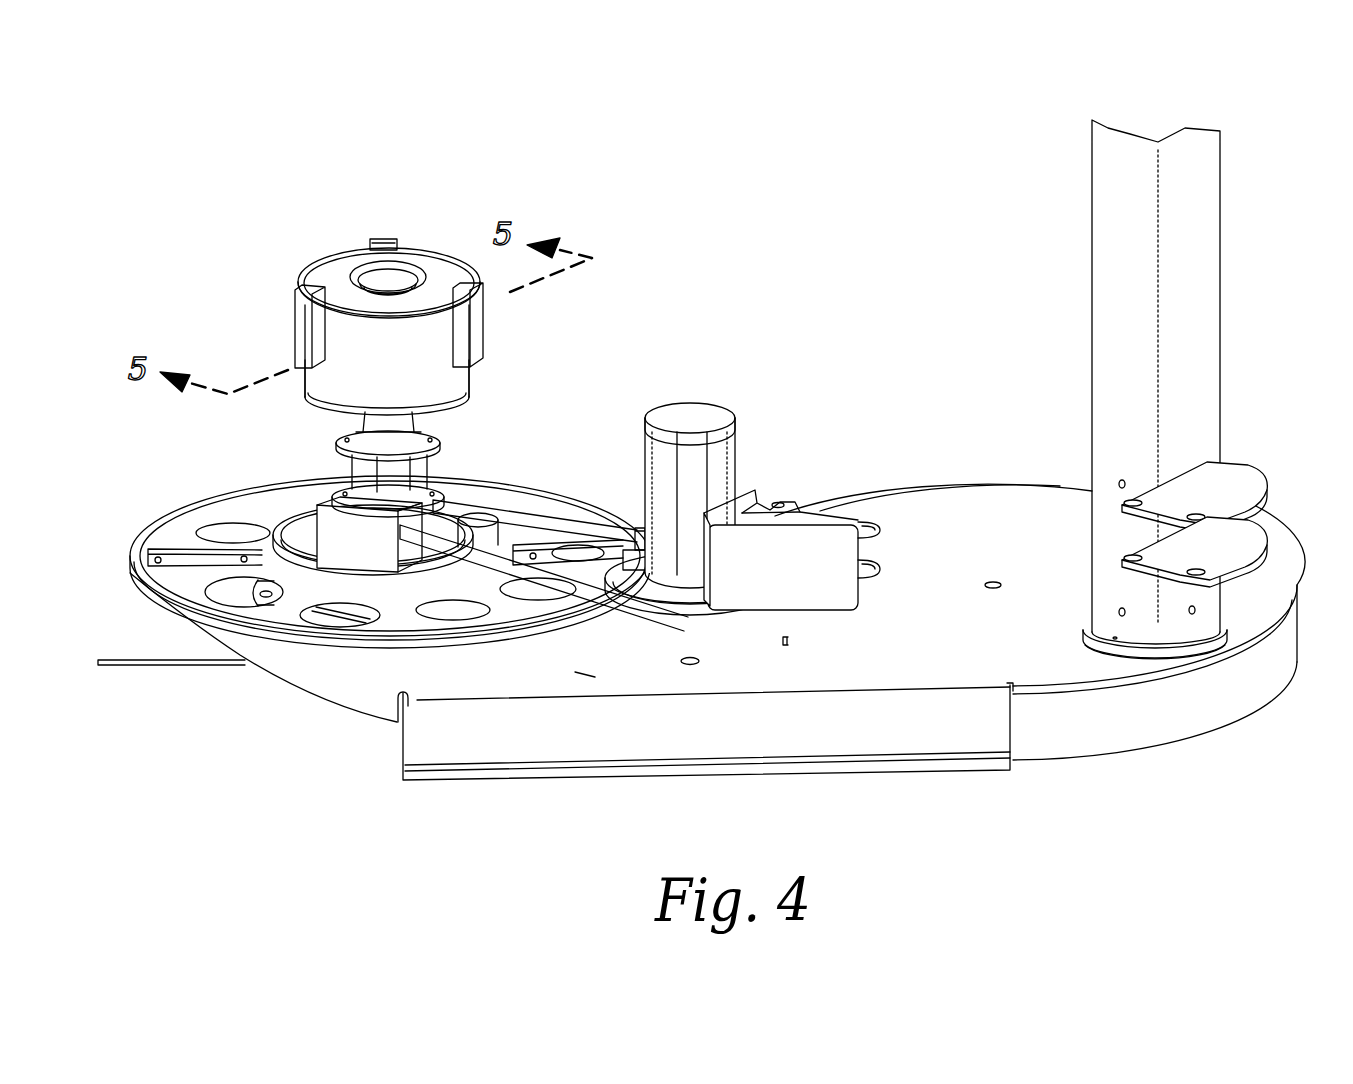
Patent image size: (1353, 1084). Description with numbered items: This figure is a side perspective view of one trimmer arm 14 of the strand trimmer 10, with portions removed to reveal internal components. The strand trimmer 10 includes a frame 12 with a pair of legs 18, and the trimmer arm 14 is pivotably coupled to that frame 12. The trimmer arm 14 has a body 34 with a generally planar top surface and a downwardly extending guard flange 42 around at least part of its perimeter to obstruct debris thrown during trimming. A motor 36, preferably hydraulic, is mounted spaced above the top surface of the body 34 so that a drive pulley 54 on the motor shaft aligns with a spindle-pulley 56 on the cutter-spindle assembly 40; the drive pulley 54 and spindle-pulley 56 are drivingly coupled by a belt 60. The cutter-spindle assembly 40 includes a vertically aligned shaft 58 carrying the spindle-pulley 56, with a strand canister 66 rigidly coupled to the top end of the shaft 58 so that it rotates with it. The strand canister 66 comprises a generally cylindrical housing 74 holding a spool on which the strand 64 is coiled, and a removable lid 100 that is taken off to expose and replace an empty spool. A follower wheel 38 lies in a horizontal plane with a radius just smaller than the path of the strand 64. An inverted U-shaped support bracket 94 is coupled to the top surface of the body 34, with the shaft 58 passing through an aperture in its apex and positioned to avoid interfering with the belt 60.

The strand trimmer 10 is at (886, 148).
The frame 12 is at (1248, 258).
The trimmer arm 14 is at (1130, 770).
The legs 18 is at (1226, 382).
The body 34 is at (975, 506).
The motor 36 is at (712, 410).
The follower wheel 38 is at (148, 557).
The cutter-spindle assembly 40 is at (572, 348).
The guard flange 42 is at (965, 745).
The drive pulley 54 is at (684, 590).
The spindle-pulley 56 is at (458, 528).
The shaft 58 is at (438, 433).
The belt 60 is at (322, 466).
The strand 64 is at (100, 668).
The strand canister 66 is at (334, 295).
The housing 74 is at (313, 384).
The support bracket 94 is at (340, 555).
The lid 100 is at (330, 268).